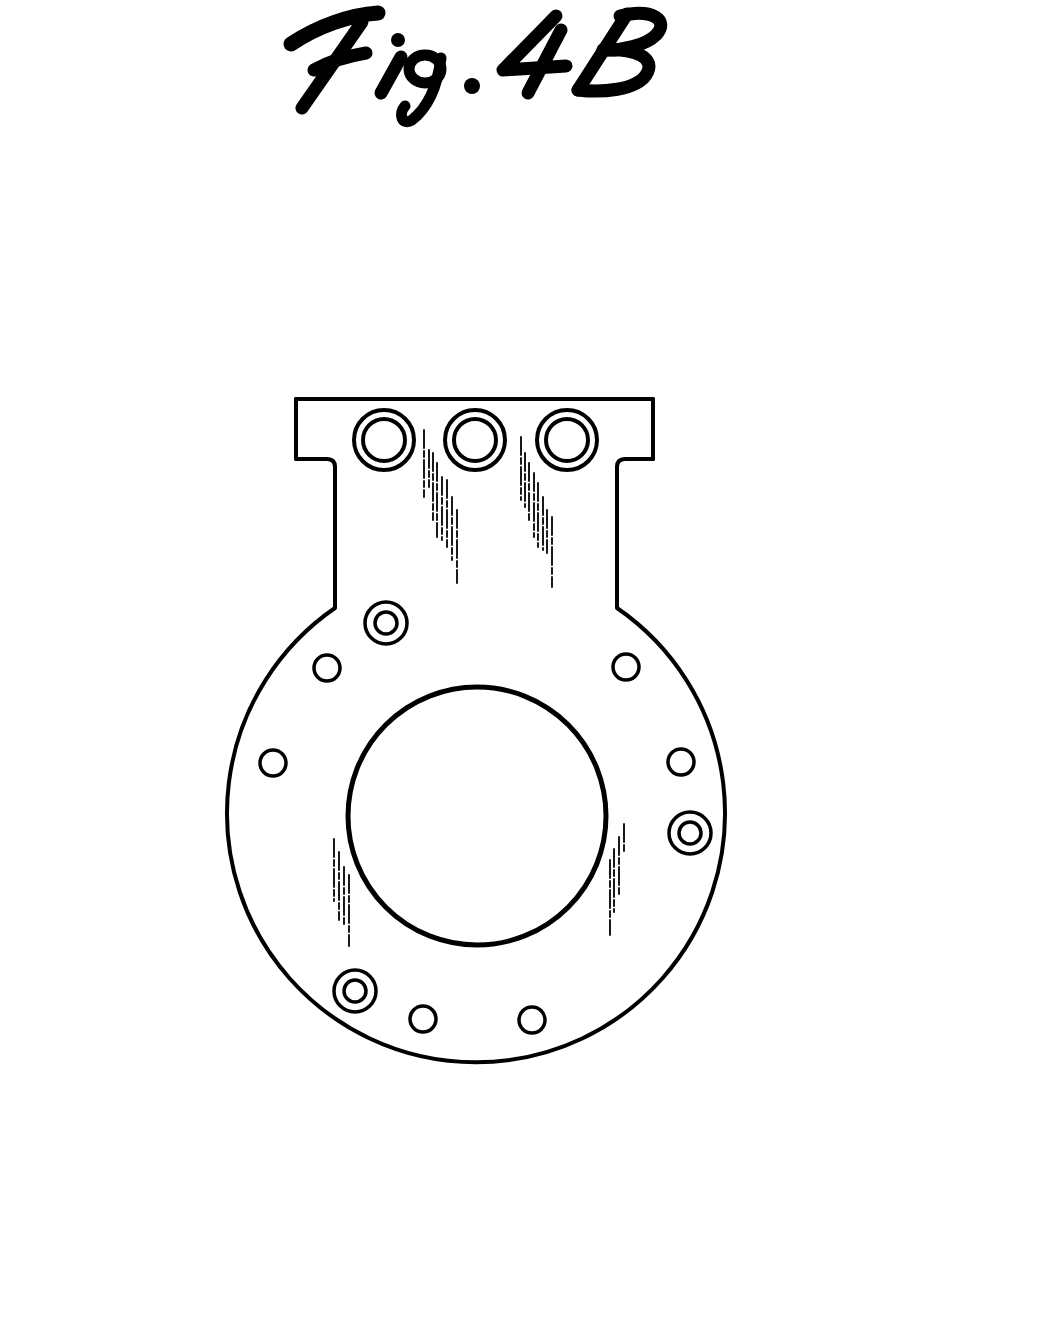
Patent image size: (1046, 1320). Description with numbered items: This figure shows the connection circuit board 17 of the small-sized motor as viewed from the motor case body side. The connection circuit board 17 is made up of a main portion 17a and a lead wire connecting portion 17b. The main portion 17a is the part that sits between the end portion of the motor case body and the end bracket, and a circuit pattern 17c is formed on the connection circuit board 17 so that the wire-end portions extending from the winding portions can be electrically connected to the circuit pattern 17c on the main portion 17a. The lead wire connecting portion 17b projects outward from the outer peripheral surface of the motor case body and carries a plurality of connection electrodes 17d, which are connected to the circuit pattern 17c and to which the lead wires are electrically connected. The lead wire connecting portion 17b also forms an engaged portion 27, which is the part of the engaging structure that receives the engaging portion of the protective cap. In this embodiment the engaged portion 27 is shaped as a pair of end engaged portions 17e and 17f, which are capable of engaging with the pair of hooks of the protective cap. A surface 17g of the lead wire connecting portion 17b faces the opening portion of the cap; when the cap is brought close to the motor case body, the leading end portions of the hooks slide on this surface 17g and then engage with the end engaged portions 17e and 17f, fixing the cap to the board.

The connection circuit board 17 is at (486, 717).
The main portion 17a is at (297, 943).
The lead wire connecting portion 17b is at (383, 411).
The circuit pattern 17c is at (262, 752).
The connection electrodes 17d is at (556, 413).
The end engaged portion 17e is at (288, 437).
The end engaged portion 17f is at (655, 433).
The surface 17g is at (318, 448).
The engaged portion 27 is at (308, 417).